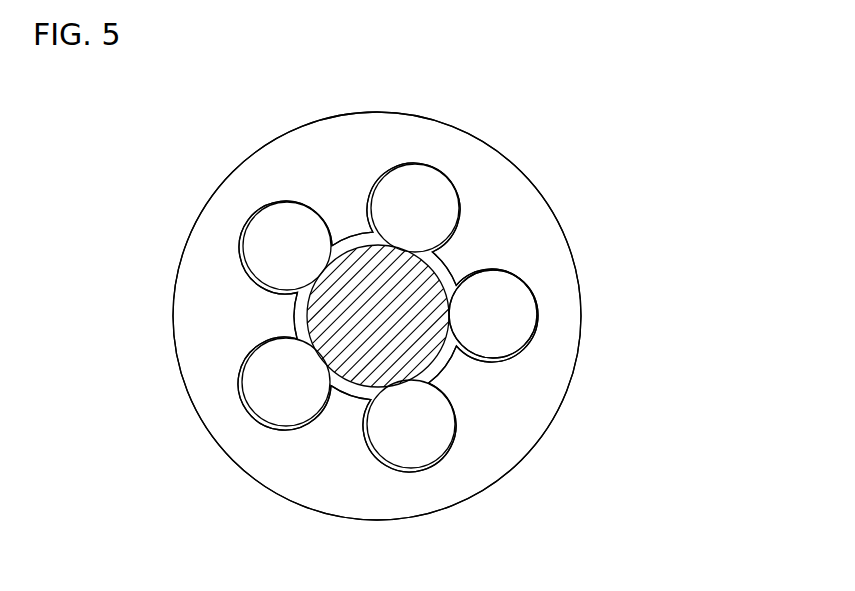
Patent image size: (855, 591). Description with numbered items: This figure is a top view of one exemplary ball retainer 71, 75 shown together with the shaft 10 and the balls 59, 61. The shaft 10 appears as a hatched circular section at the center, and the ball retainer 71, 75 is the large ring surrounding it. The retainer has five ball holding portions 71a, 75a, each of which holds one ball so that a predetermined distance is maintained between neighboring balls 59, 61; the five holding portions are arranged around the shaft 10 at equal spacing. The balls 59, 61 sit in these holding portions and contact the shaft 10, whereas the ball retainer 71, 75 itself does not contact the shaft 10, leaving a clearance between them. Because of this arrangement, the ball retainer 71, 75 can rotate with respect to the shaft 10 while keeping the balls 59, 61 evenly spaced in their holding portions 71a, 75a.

The shaft 10 is at (335, 340).
The ball 59 is at (515, 325).
The ball 61 is at (493, 314).
The ball retainer 71 is at (228, 150).
The ball retainer 75 is at (377, 316).
The ball holding portion 71a is at (528, 248).
The ball holding portion 75a is at (388, 317).